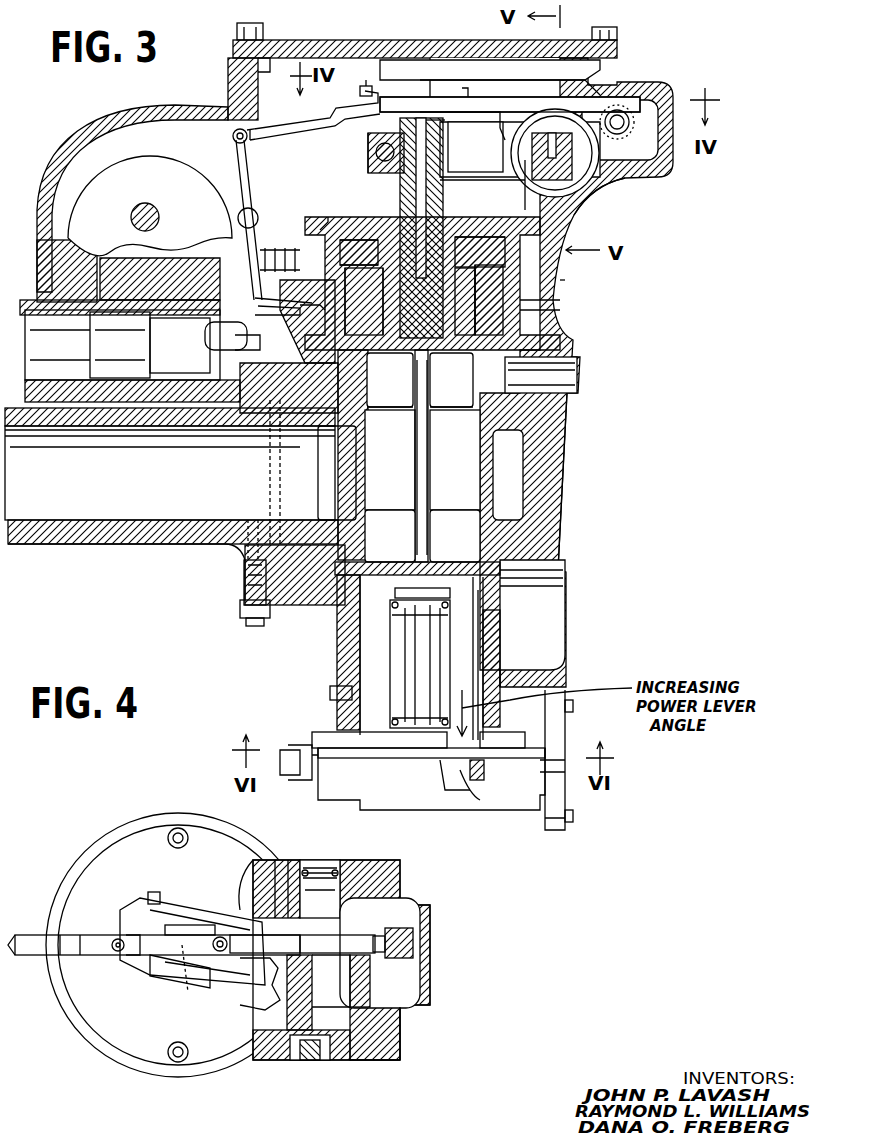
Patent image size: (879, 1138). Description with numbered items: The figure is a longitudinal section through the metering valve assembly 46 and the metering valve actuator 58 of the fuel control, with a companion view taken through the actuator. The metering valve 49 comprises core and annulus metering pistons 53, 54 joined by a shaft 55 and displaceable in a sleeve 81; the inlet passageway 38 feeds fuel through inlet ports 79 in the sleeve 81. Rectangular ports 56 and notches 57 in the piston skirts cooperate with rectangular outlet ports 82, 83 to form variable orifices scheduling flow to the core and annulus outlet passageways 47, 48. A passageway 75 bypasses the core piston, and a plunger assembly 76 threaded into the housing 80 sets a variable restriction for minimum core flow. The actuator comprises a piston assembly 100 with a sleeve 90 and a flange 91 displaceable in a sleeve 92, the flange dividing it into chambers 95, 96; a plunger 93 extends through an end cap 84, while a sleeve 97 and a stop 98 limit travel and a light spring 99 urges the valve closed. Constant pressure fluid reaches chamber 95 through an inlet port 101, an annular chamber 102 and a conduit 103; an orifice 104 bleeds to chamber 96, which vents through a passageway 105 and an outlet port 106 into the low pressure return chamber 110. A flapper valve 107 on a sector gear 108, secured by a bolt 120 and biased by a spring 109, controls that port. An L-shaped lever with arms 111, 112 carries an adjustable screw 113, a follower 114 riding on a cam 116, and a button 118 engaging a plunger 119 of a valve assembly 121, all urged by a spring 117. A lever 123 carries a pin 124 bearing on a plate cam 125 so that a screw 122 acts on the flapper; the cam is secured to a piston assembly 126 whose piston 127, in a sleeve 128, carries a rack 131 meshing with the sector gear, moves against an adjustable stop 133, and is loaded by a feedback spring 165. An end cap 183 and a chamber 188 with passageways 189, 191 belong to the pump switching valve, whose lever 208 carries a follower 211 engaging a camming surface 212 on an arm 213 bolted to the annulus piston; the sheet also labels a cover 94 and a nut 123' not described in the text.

In FIG. 3, the inlet passageway 38 is at (78, 520).
In FIG. 3, the metering valve assembly 46 is at (598, 491).
In FIG. 3, the core outlet passageway 47 is at (555, 395).
In FIG. 3, the annulus outlet passageway 48 is at (566, 663).
In FIG. 3, the metering valve 49 is at (442, 437).
In FIG. 3, the core metering piston 53 is at (440, 418).
In FIG. 3, the annulus metering piston 54 is at (447, 506).
In FIG. 3, the shaft 55 is at (432, 466).
In FIG. 3, the rectangular ports 56 is at (475, 360).
In FIG. 3, the rectangular notches 57 is at (475, 531).
In FIG. 3, the metering valve actuator 58 is at (632, 214).
In FIG. 4, the metering valve actuator 58 is at (428, 888).
In FIG. 3, the passageway 75 is at (252, 522).
In FIG. 3, the plunger assembly 76 is at (244, 573).
In FIG. 3, the inlet ports 79 is at (352, 508).
In FIG. 3, the housing 80 is at (160, 545).
In FIG. 3, the sleeve 81 is at (490, 440).
In FIG. 3, the rectangular outlet ports 82 is at (475, 380).
In FIG. 3, the rectangular outlet ports 83 is at (368, 556).
In FIG. 3, the end cap 84 is at (312, 745).
In FIG. 3, the sleeve 90 is at (505, 304).
In FIG. 3, the flange 91 is at (560, 270).
In FIG. 3, the sleeve 92 is at (545, 296).
In FIG. 3, the plunger 93 is at (443, 186).
In FIG. 4, the plunger 93 is at (178, 925).
In FIG. 3, the cover 94 is at (368, 217).
In FIG. 4, the cover 94 is at (138, 1048).
In FIG. 3, the variable volume chamber 95 is at (377, 301).
In FIG. 3, the variable volume chamber 96 is at (370, 250).
In FIG. 3, the sleeve 97 is at (460, 280).
In FIG. 3, the stop 98 is at (286, 157).
In FIG. 3, the light spring 99 is at (390, 610).
In FIG. 3, the piston assembly 100 is at (550, 306).
In FIG. 3, the inlet port 101 is at (347, 301).
In FIG. 3, the annular chamber 102 is at (310, 320).
In FIG. 3, the conduit 103 is at (300, 304).
In FIG. 3, the orifice 104 is at (359, 262).
In FIG. 3, the passageway 105 is at (452, 200).
In FIG. 3, the outlet port 106 is at (415, 112).
In FIG. 4, the outlet port 106 is at (190, 985).
In FIG. 3, the flapper valve 107 is at (445, 160).
In FIG. 4, the flapper valve 107 is at (165, 978).
In FIG. 3, the sector gear 108 is at (490, 172).
In FIG. 4, the sector gear 108 is at (196, 925).
In FIG. 3, the spring 109 is at (428, 113).
In FIG. 3, the low pressure return chamber 110 is at (466, 75).
In FIG. 3, the arm 111 is at (300, 130).
In FIG. 4, the arm 111 is at (88, 935).
In FIG. 3, the arm 112 is at (232, 145).
In FIG. 3, the adjustable screw 113 is at (380, 86).
In FIG. 4, the adjustable screw 113 is at (112, 950).
In FIG. 3, the follower 114 is at (258, 210).
In FIG. 3, the cam 116 is at (60, 150).
In FIG. 3, the spring 117 is at (270, 225).
In FIG. 3, the button 118 is at (215, 330).
In FIG. 3, the plunger 119 is at (215, 346).
In FIG. 3, the bolt 120 is at (368, 173).
In FIG. 4, the bolt 120 is at (158, 900).
In FIG. 3, the valve assembly 121 is at (130, 348).
In FIG. 3, the screw 122 is at (482, 80).
In FIG. 4, the screw 122 is at (222, 937).
In FIG. 3, the lever 123 is at (510, 86).
In FIG. 4, the lever 123 is at (302, 943).
In FIG. 3, the power lever nut 123' is at (633, 77).
In FIG. 4, the power lever nut 123' is at (426, 935).
In FIG. 3, the pin 124 is at (610, 105).
In FIG. 4, the pin 124 is at (372, 916).
In FIG. 3, the plate cam 125 is at (580, 150).
In FIG. 4, the plate cam 125 is at (318, 1000).
In FIG. 3, the piston assembly 126 is at (622, 186).
In FIG. 4, the piston assembly 126 is at (402, 1014).
In FIG. 4, the piston 127 is at (298, 860).
In FIG. 4, the sleeve 128 is at (360, 1062).
In FIG. 3, the rack 131 is at (519, 186).
In FIG. 4, the rack 131 is at (270, 1004).
In FIG. 4, the adjustable stop 133 is at (312, 1062).
In FIG. 4, the feedback spring 165 is at (330, 858).
In FIG. 3, the end cap 183 is at (548, 832).
In FIG. 3, the chamber 188 is at (436, 772).
In FIG. 3, the passageway 189 is at (330, 693).
In FIG. 3, the passageway 191 is at (400, 660).
In FIG. 3, the lever 208 is at (480, 800).
In FIG. 3, the follower 211 is at (455, 808).
In FIG. 3, the camming surface 212 is at (450, 785).
In FIG. 3, the arm 213 is at (485, 652).